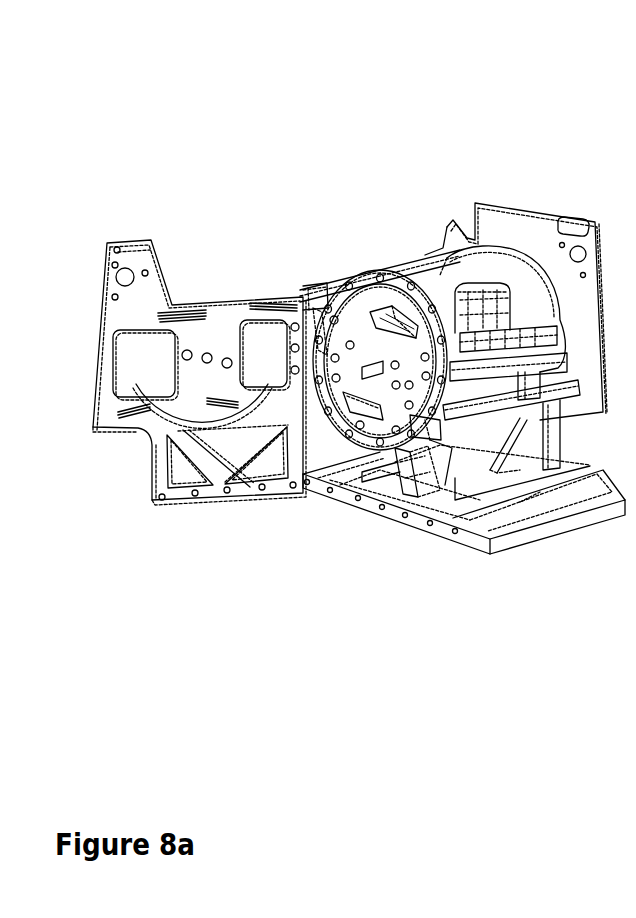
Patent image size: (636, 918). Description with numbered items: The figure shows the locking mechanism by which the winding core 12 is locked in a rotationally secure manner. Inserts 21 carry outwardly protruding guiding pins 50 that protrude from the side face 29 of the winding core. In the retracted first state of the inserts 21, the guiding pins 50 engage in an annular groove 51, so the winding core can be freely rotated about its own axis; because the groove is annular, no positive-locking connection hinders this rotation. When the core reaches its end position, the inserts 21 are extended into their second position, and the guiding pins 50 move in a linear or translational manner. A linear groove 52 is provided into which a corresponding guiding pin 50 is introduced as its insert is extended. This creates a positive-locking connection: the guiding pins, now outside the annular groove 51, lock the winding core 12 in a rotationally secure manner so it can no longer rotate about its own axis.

The winding core 12 is at (162, 433).
The insert 21 is at (473, 285).
The side face 29 is at (377, 303).
The guiding pin 50 is at (369, 323).
The annular groove 51 is at (215, 420).
The linear groove 52 is at (170, 313).